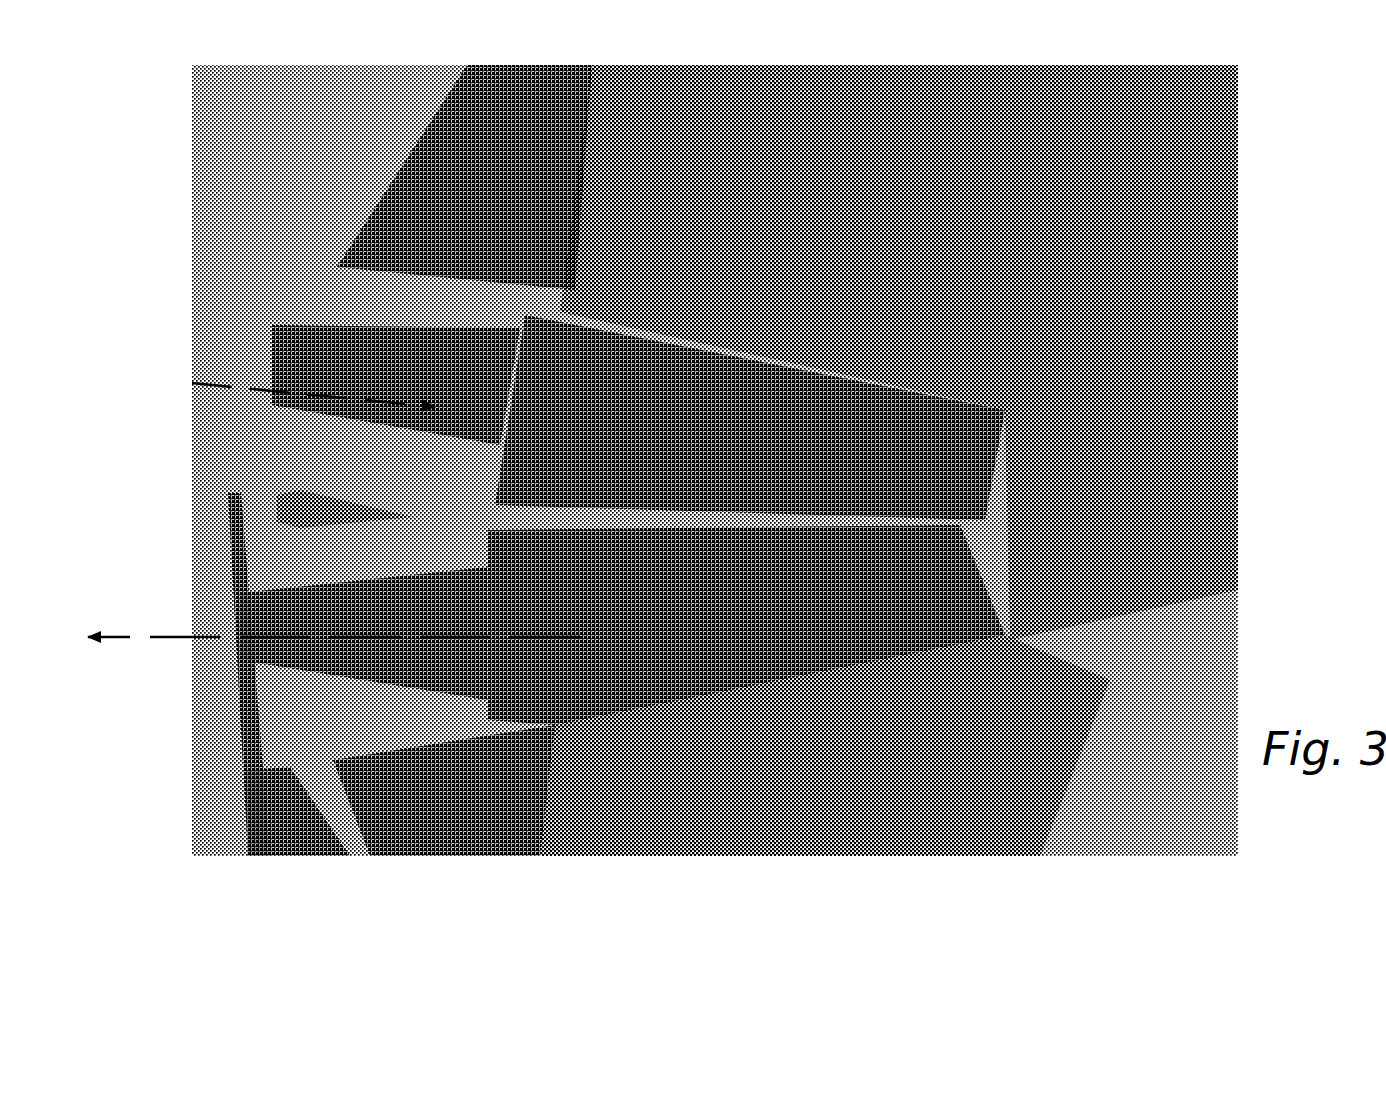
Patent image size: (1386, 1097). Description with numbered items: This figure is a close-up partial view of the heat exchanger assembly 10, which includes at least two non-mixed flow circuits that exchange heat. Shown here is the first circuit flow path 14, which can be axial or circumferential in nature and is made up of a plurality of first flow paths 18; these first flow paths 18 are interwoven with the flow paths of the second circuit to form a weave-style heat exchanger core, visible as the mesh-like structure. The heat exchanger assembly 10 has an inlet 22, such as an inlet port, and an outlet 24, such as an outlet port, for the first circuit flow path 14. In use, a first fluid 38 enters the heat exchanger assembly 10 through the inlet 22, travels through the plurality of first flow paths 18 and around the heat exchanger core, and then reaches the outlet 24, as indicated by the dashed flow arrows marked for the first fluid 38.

The heat exchanger assembly 10 is at (1262, 160).
The first circuit flow path 14 is at (523, 403).
The first flow paths 18 is at (740, 418).
The inlet 22 is at (335, 365).
The outlet 24 is at (290, 672).
The first fluid 38 is at (177, 378).